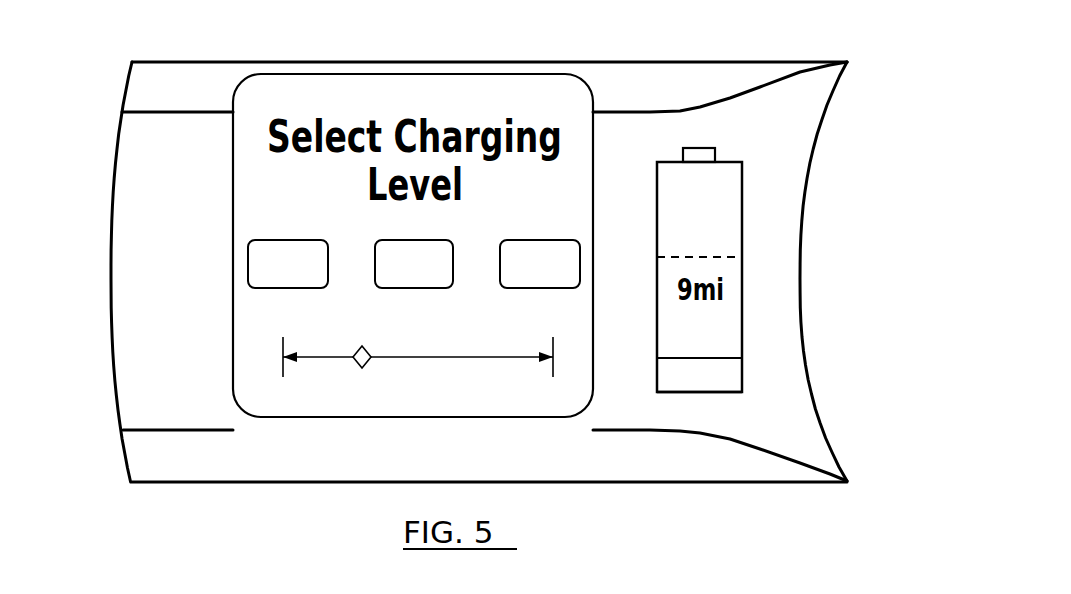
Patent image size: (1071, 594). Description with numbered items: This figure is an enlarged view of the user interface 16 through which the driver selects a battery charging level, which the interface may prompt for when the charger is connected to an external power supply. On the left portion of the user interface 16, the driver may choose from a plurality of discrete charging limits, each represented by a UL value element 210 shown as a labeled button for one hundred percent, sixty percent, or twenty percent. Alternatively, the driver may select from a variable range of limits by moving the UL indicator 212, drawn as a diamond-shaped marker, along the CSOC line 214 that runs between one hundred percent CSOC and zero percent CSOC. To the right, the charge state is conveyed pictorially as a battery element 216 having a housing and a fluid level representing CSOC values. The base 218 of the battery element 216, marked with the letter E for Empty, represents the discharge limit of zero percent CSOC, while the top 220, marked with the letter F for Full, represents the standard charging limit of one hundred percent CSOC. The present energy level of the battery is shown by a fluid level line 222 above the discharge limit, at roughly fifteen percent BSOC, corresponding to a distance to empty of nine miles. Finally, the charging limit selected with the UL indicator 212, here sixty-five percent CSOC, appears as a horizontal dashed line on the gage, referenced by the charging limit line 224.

The user interface 16 is at (756, 60).
The UL value element 210 is at (240, 262).
The UL indicator 212 is at (364, 369).
The CSOC line 214 is at (431, 350).
The battery element 216 is at (748, 204).
The base of the battery element 218 is at (718, 392).
The top of the battery element 220 is at (727, 157).
The fluid level line 222 is at (725, 358).
The charging limit line 224 is at (720, 258).